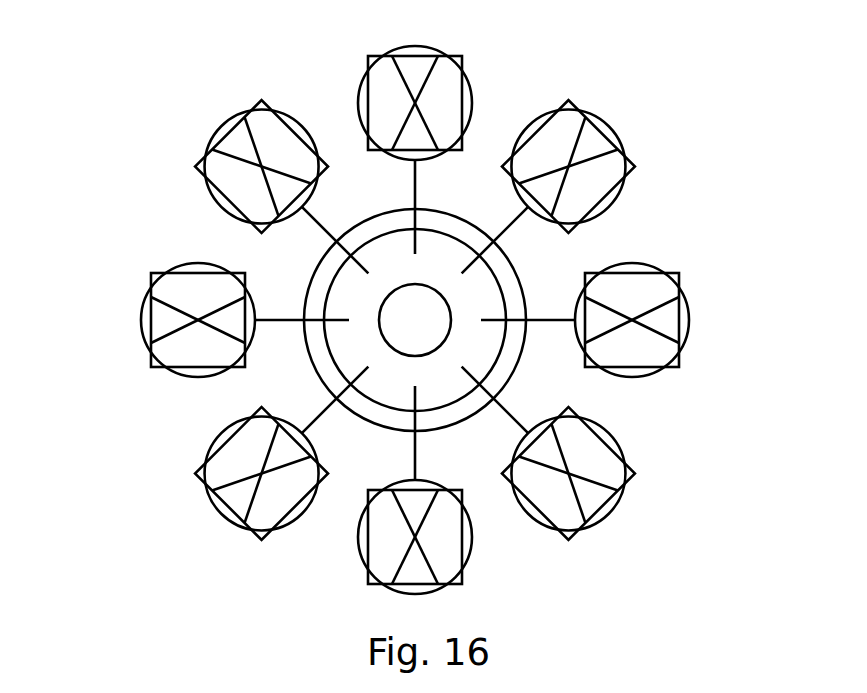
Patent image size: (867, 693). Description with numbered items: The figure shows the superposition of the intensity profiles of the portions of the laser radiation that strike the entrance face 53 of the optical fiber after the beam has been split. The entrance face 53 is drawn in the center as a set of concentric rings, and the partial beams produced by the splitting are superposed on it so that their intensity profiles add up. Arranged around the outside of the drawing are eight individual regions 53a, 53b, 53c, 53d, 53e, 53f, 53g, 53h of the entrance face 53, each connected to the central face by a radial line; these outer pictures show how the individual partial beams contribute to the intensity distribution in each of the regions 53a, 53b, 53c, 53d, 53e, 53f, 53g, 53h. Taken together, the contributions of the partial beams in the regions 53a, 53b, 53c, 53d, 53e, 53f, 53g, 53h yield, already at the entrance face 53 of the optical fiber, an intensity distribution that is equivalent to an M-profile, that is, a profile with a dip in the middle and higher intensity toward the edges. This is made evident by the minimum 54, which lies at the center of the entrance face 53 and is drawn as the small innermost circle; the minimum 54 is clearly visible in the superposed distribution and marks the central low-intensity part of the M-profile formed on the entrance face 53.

The entrance face 53 is at (302, 371).
The minimum 54 is at (428, 338).
The region of the entrance face 53a is at (140, 320).
The region of the entrance face 53b is at (218, 126).
The region of the entrance face 53c is at (477, 103).
The region of the entrance face 53d is at (612, 207).
The region of the entrance face 53e is at (633, 380).
The region of the entrance face 53f is at (537, 528).
The region of the entrance face 53g is at (368, 540).
The region of the entrance face 53h is at (208, 447).